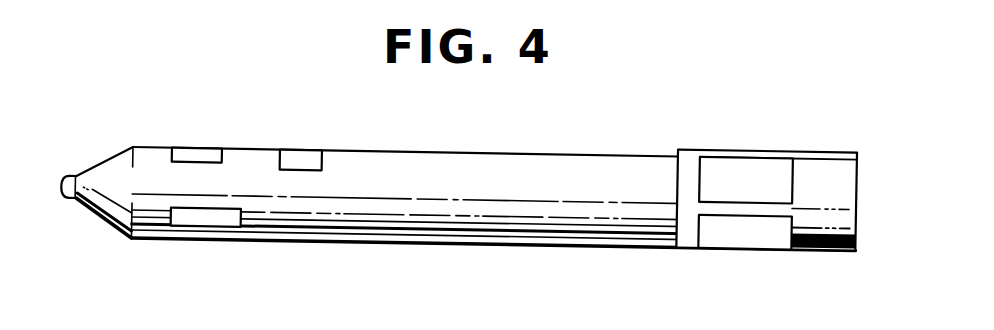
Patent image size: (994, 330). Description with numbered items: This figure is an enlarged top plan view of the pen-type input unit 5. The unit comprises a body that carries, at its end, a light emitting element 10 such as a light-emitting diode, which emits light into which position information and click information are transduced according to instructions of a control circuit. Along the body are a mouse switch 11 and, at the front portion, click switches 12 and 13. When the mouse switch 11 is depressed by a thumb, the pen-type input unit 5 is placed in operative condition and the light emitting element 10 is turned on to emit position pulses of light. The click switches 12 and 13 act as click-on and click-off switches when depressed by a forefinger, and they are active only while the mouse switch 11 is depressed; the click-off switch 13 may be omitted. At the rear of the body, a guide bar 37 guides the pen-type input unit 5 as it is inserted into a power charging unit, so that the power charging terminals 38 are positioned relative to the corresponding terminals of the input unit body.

The pen-type input unit 5 is at (518, 245).
The light emitting element 10 is at (66, 193).
The mouse switch 11 is at (207, 221).
The click switch 12 is at (188, 157).
The click switch 13 is at (300, 165).
The guide bar 37 is at (702, 149).
The power charging terminals 38 is at (702, 181).